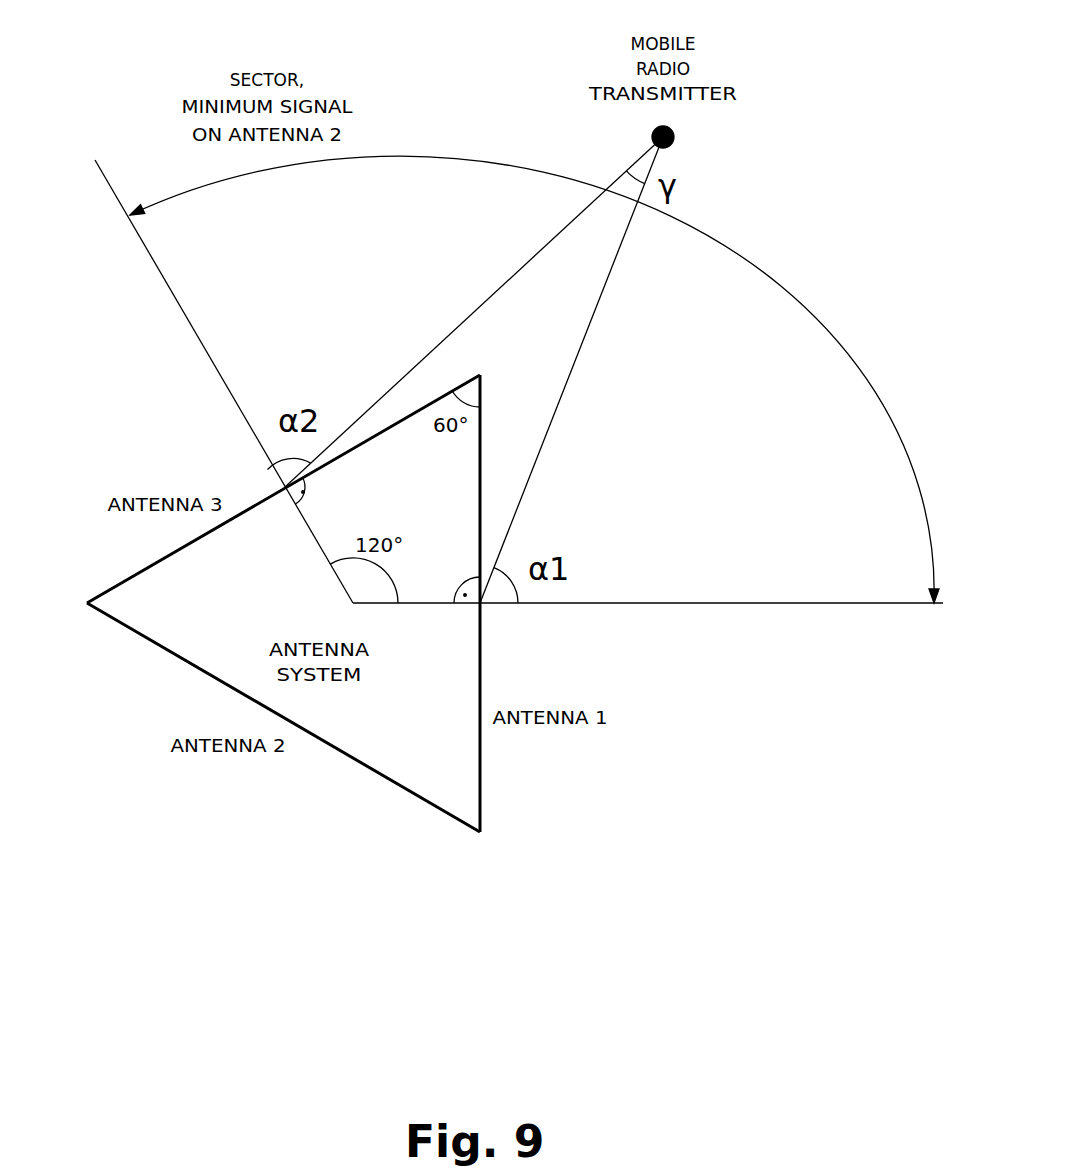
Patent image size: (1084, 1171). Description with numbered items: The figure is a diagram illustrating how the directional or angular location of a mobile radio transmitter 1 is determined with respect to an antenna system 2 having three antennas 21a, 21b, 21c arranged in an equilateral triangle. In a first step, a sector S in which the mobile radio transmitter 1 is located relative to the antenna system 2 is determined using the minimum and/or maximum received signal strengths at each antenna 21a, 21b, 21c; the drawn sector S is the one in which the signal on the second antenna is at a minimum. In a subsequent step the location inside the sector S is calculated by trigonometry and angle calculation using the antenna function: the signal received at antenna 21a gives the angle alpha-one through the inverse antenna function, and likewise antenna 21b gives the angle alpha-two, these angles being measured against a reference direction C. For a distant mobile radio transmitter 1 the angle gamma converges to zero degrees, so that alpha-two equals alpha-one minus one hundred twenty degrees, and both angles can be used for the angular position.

The mobile radio transmitter 1 is at (704, 137).
The antenna system 2 is at (305, 619).
The antenna 21a is at (480, 773).
The antenna 21b is at (390, 782).
The antenna 21c is at (131, 575).
The sector S is at (467, 176).
The reference direction C is at (805, 735).